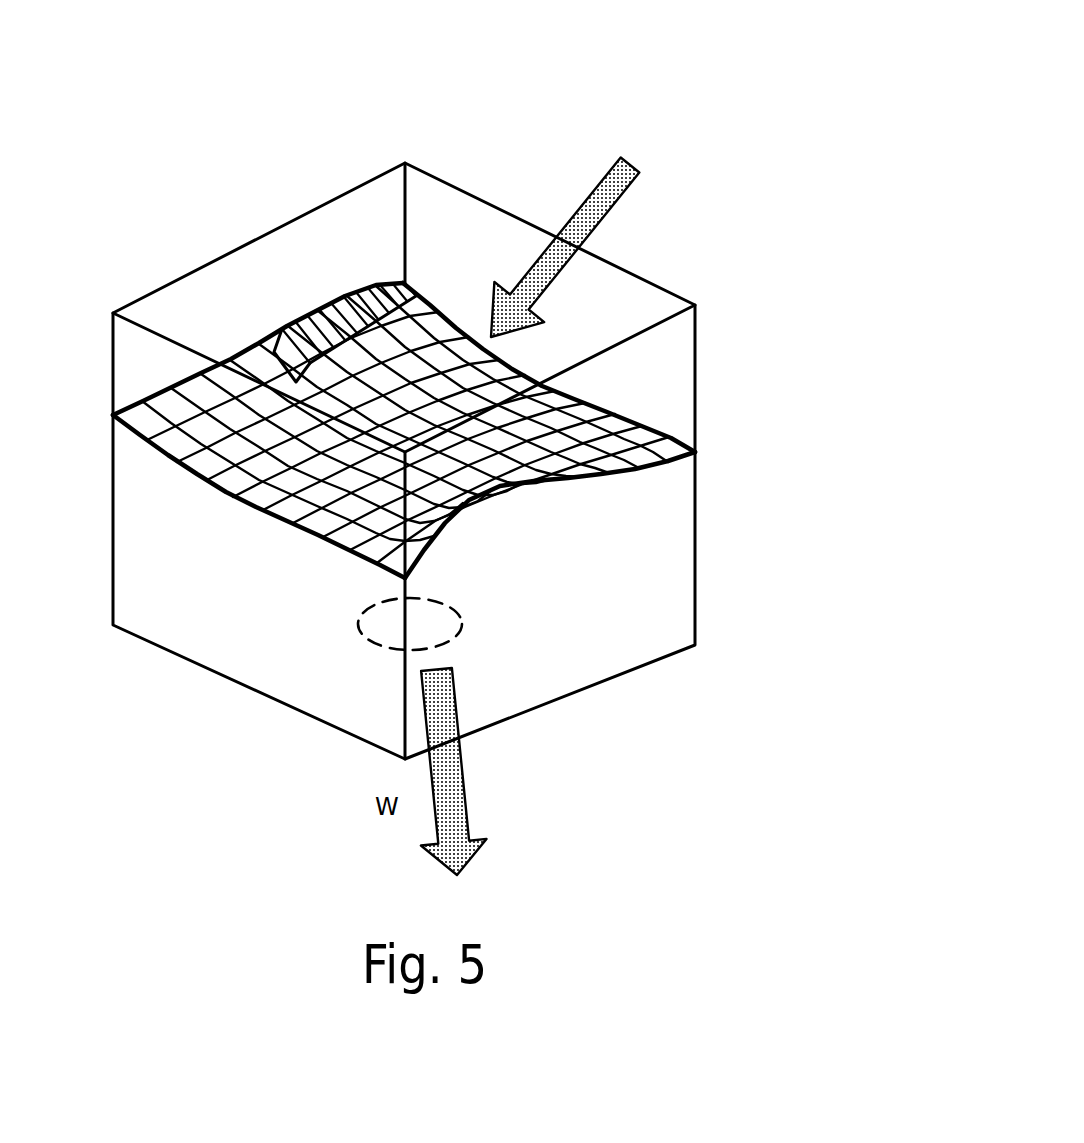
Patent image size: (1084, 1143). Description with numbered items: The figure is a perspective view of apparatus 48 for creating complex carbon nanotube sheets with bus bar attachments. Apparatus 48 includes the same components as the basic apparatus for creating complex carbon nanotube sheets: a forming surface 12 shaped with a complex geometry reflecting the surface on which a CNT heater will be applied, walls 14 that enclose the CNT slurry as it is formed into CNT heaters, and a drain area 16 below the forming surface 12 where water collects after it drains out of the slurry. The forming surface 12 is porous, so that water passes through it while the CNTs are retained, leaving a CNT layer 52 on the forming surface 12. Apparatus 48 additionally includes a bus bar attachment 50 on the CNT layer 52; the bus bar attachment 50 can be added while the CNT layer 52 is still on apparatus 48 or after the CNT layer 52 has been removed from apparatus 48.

The forming surface 12 is at (518, 471).
The walls 14 is at (255, 238).
The drain area 16 is at (377, 637).
The apparatus 48 is at (640, 104).
The bus bar attachment 50 is at (401, 293).
The CNT layer 52 is at (515, 431).